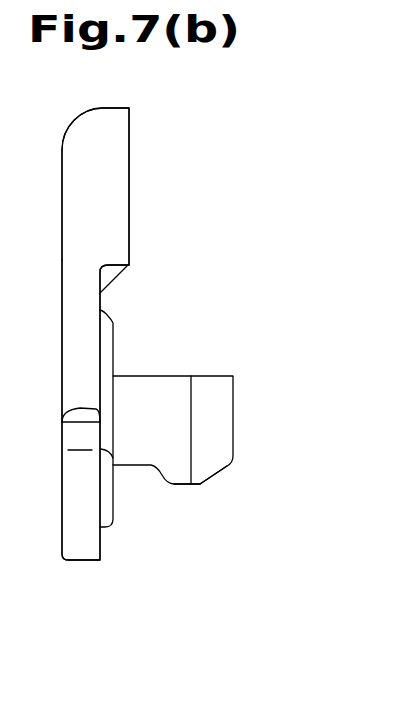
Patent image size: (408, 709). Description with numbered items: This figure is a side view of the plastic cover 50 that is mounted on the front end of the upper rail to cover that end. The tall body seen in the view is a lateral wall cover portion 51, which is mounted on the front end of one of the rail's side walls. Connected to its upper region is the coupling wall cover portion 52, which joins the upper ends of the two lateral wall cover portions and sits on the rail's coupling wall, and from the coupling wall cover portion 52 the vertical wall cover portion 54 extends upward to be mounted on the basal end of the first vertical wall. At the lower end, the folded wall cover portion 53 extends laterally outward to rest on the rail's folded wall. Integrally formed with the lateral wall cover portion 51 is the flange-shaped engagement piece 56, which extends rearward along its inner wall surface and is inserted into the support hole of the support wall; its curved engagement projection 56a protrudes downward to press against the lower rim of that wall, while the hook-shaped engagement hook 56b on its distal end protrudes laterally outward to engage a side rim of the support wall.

The cover 50 is at (208, 259).
The lateral wall cover portion 51 is at (70, 362).
The coupling wall cover portion 52 is at (113, 320).
The folded wall cover portion 53 is at (83, 560).
The vertical wall cover portion 54 is at (77, 176).
The engagement piece 56 is at (143, 450).
The engagement projection 56a is at (183, 486).
The engagement hook 56b is at (215, 478).